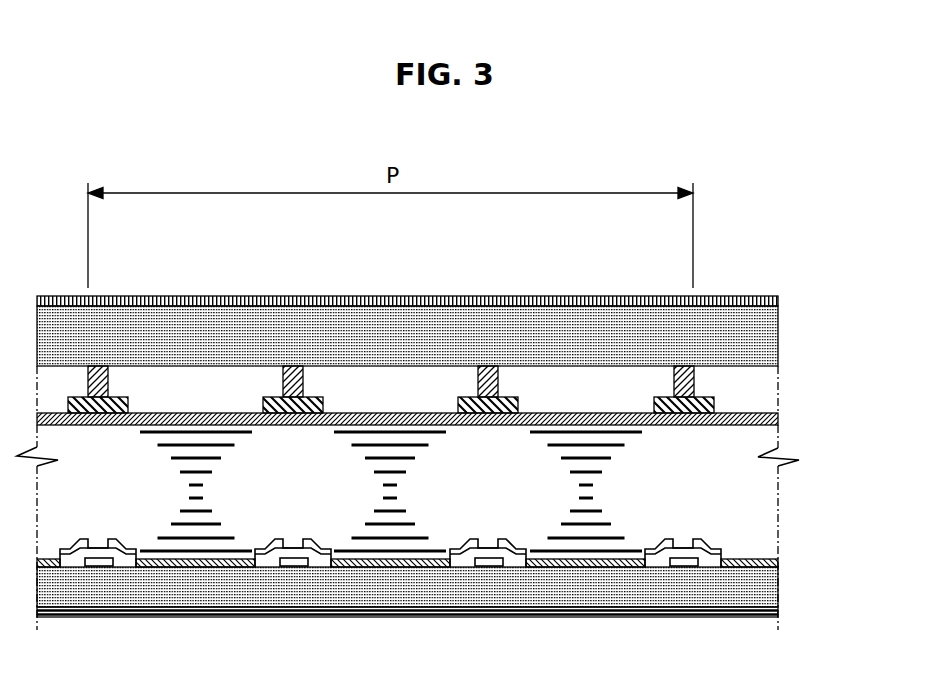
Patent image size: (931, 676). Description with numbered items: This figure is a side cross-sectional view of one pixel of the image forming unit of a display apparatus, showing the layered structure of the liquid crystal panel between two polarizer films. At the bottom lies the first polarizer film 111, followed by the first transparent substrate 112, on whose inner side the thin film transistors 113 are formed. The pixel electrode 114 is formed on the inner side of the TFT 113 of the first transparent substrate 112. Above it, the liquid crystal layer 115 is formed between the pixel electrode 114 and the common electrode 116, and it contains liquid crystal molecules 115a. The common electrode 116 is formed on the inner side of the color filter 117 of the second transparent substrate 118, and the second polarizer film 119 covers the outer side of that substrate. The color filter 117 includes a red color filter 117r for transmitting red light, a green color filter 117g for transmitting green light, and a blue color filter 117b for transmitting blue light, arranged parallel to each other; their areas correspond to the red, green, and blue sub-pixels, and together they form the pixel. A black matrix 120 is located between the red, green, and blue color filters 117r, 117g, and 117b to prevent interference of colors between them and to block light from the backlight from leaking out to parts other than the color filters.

The first polarizer film 111 is at (778, 613).
The first transparent substrate 112 is at (778, 593).
The thin film transistor 113 is at (702, 550).
The pixel electrode 114 is at (778, 562).
The liquid crystal layer 115 is at (778, 500).
The liquid crystal molecules 115a is at (389, 553).
The common electrode 116 is at (778, 421).
The color filter 117 is at (445, 329).
The red color filter 117r is at (240, 379).
The green color filter 117g is at (444, 379).
The blue color filter 117b is at (631, 379).
The second transparent substrate 118 is at (778, 341).
The second polarizer film 119 is at (778, 302).
The black matrix 120 is at (705, 397).